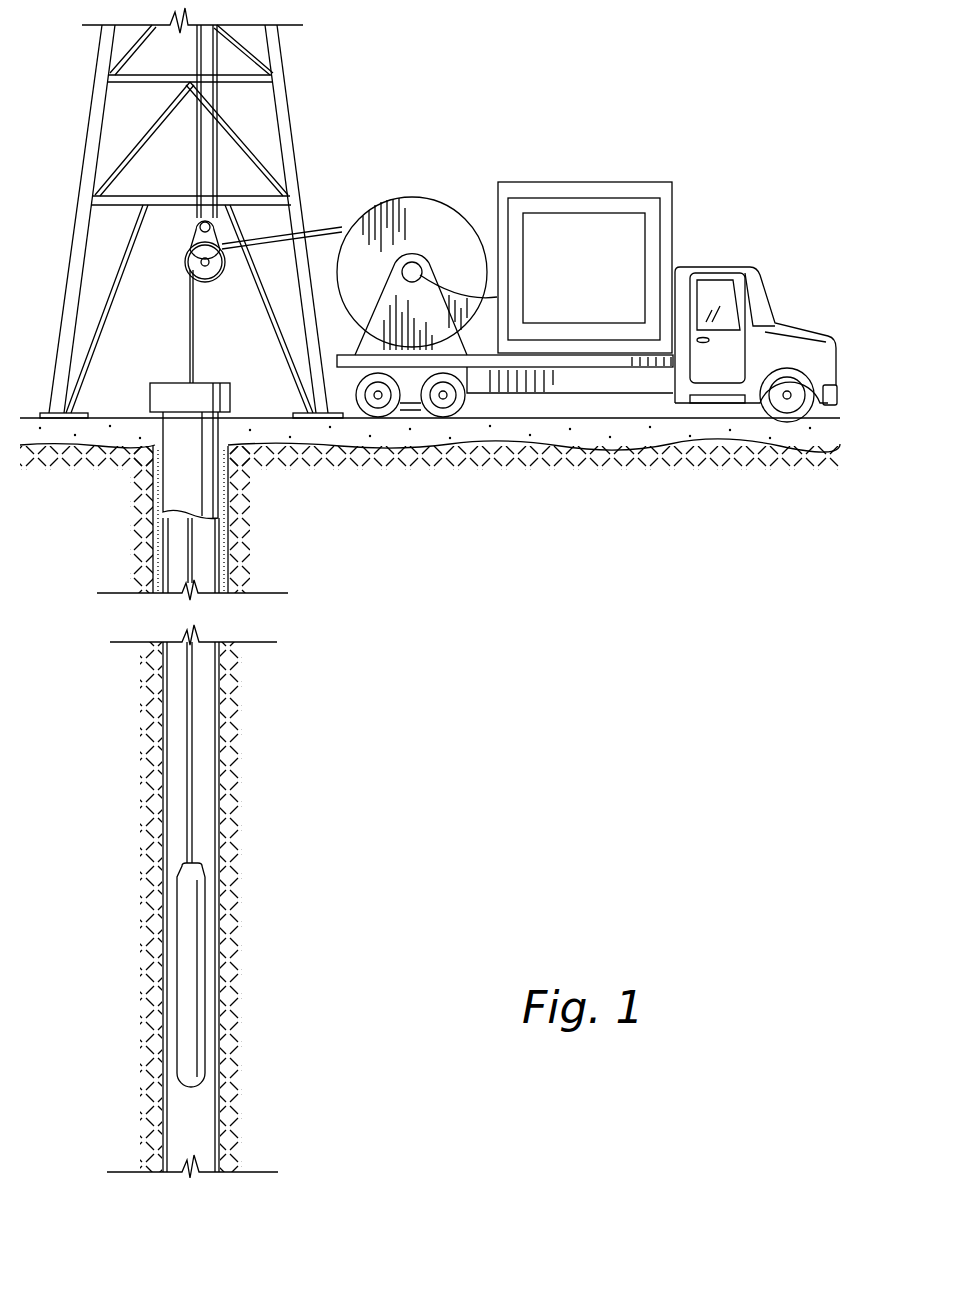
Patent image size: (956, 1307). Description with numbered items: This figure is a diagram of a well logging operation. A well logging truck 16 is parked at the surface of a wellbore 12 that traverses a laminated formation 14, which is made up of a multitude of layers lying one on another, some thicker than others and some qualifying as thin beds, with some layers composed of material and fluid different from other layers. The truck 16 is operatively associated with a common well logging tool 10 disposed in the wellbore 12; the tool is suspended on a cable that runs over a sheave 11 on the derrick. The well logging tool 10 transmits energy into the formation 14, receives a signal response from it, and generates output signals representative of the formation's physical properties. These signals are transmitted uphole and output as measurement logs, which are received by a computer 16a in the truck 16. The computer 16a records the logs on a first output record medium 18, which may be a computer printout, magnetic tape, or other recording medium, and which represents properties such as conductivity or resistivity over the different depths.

The well logging tool 10 is at (192, 985).
The sheave 11 is at (212, 283).
The wellbore 12 is at (215, 1138).
The laminated formation 14 is at (222, 723).
The well logging truck 16 is at (708, 267).
The computer 16a is at (587, 198).
The first output record medium 18 is at (635, 213).